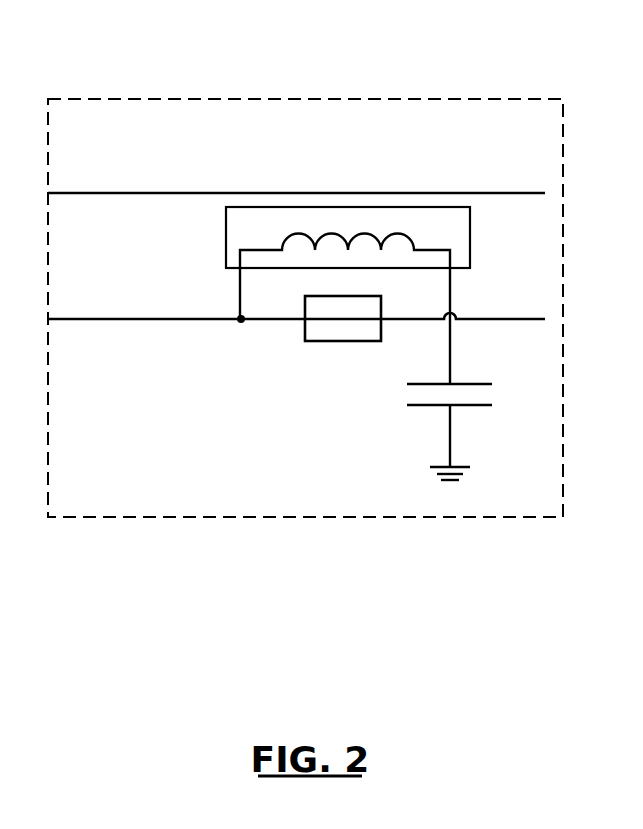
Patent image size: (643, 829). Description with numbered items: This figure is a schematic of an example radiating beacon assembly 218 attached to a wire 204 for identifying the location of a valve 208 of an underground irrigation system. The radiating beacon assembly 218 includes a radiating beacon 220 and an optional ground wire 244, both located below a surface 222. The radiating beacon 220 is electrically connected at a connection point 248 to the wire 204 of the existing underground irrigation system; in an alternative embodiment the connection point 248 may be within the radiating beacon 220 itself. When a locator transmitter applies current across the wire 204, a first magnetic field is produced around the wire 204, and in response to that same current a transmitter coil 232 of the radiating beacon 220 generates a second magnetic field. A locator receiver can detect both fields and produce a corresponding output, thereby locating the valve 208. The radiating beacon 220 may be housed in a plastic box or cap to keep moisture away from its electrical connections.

The radiating beacon assembly 218 is at (110, 98).
The surface 222 is at (160, 193).
The wire 204 is at (160, 319).
The radiating beacon 220 is at (226, 263).
The transmitter coil 232 is at (367, 232).
The connection point 248 is at (241, 319).
The valve 208 is at (317, 345).
The ground wire 244 is at (450, 357).